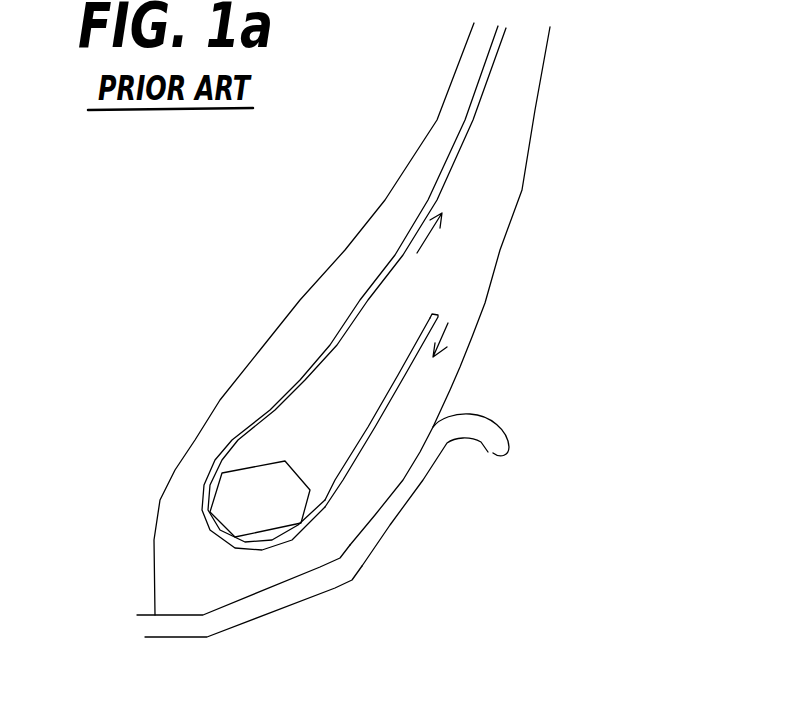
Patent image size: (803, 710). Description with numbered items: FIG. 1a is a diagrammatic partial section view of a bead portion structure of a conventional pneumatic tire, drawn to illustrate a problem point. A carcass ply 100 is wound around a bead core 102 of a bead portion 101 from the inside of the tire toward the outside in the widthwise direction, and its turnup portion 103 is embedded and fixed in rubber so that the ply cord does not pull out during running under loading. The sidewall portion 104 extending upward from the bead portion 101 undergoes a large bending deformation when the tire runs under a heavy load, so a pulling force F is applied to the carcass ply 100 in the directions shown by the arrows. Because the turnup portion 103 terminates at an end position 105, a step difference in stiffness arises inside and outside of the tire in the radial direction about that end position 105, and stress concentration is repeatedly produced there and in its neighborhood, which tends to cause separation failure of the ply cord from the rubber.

The carcass ply 100 is at (457, 143).
The bead portion 101 is at (175, 558).
The bead core 102 is at (253, 497).
The turnup portion 103 is at (355, 459).
The sidewall portion 104 is at (532, 72).
The end position 105 is at (436, 315).
The pulling force F is at (425, 238).